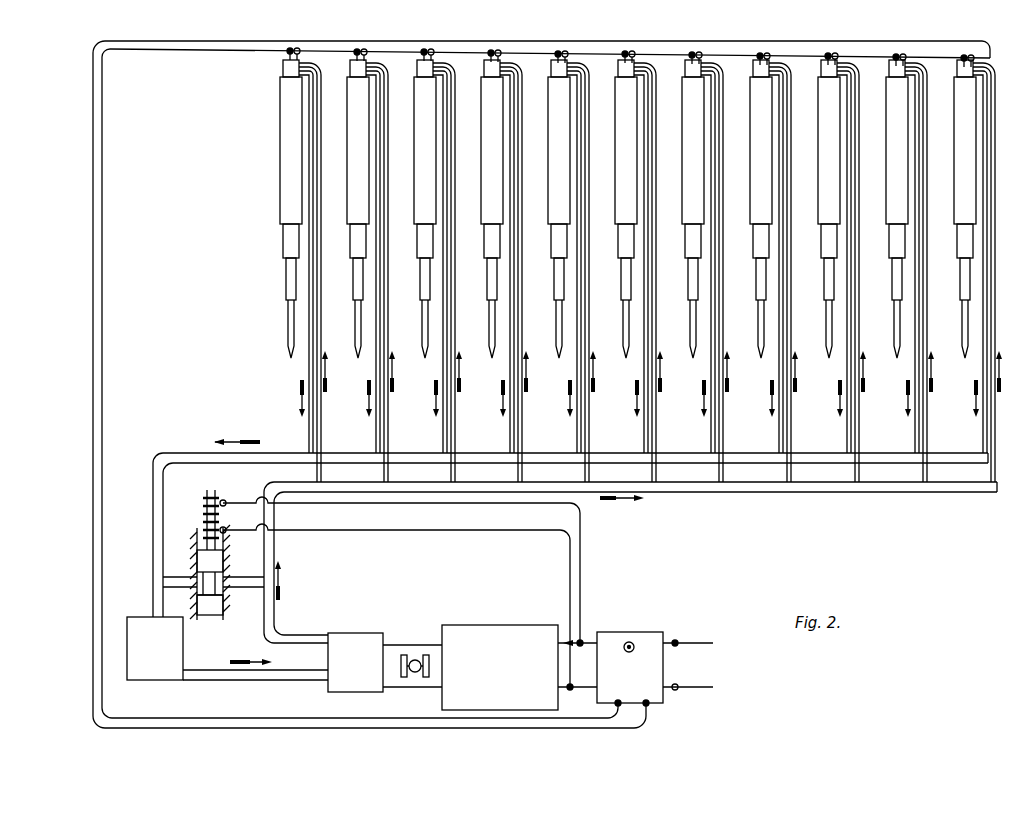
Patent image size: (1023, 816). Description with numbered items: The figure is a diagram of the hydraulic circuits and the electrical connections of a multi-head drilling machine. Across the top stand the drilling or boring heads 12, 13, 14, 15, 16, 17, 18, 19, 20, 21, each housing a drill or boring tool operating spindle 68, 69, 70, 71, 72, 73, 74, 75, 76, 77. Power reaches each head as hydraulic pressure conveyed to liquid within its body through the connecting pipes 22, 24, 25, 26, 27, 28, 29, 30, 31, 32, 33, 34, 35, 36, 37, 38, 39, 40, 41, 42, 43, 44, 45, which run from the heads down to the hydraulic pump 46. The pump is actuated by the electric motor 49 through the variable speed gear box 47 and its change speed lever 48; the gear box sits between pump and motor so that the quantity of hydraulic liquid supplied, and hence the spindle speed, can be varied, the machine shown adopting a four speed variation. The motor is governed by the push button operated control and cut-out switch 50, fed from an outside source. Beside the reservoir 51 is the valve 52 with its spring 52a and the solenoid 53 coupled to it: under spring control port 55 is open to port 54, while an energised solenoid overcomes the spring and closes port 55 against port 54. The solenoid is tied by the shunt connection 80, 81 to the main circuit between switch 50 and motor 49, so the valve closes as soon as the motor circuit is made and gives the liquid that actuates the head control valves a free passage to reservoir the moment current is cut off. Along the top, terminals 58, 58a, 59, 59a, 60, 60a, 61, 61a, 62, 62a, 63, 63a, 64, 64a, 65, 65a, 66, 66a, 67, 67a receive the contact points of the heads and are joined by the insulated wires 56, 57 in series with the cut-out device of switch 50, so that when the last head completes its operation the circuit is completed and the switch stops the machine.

The drilling or boring head 12 is at (291, 180).
The drilling or boring head 13 is at (358, 180).
The drilling or boring head 14 is at (425, 180).
The drilling or boring head 15 is at (492, 180).
The drilling or boring head 16 is at (559, 180).
The drilling or boring head 17 is at (626, 180).
The drilling or boring head 18 is at (693, 180).
The drilling or boring head 19 is at (761, 180).
The drilling or boring head 20 is at (829, 180).
The drilling or boring head 21 is at (897, 180).
The connecting pipe 22 is at (978, 268).
The connecting pipe 24 is at (712, 494).
The connecting pipe 25 is at (669, 457).
The connecting pipe 26 is at (770, 362).
The connecting pipe 27 is at (787, 358).
The connecting pipe 28 is at (702, 362).
The connecting pipe 29 is at (719, 358).
The connecting pipe 30 is at (635, 362).
The connecting pipe 31 is at (652, 358).
The connecting pipe 32 is at (838, 362).
The connecting pipe 33 is at (855, 358).
The connecting pipe 34 is at (568, 362).
The connecting pipe 35 is at (585, 358).
The connecting pipe 36 is at (501, 362).
The connecting pipe 37 is at (518, 358).
The connecting pipe 38 is at (906, 362).
The connecting pipe 39 is at (923, 358).
The connecting pipe 40 is at (300, 362).
The connecting pipe 41 is at (317, 358).
The connecting pipe 42 is at (367, 362).
The connecting pipe 43 is at (384, 358).
The connecting pipe 44 is at (434, 362).
The connecting pipe 45 is at (451, 358).
The hydraulic pump 46 is at (355, 662).
The variable speed gear box 47 is at (398, 644).
The change speed lever 48 is at (421, 660).
The electric motor 49 is at (494, 640).
The control and cut-out switch 50 is at (655, 669).
The reservoir 51 is at (125, 650).
The valve 52 is at (212, 620).
The spring 52a is at (207, 547).
The solenoid 53 is at (206, 530).
The port 54 is at (173, 590).
The port 55 is at (239, 576).
The insulated wire 56 is at (96, 364).
The insulated wire 57 is at (104, 402).
The terminal 58 is at (288, 49).
The terminal 58a is at (298, 48).
The terminal 59 is at (355, 50).
The terminal 59a is at (365, 49).
The terminal 60 is at (422, 50).
The terminal 60a is at (432, 49).
The terminal 61 is at (489, 51).
The terminal 61a is at (499, 50).
The terminal 62 is at (556, 52).
The terminal 62a is at (566, 51).
The terminal 63 is at (623, 52).
The terminal 63a is at (633, 51).
The terminal 64 is at (690, 53).
The terminal 64a is at (700, 52).
The terminal 65 is at (758, 54).
The terminal 65a is at (768, 53).
The terminal 66 is at (826, 54).
The terminal 66a is at (836, 53).
The terminal 67 is at (894, 55).
The terminal 67a is at (904, 54).
The tool operating spindle 68 is at (286, 296).
The tool operating spindle 69 is at (353, 296).
The tool operating spindle 70 is at (420, 296).
The tool operating spindle 71 is at (487, 296).
The tool operating spindle 72 is at (554, 296).
The tool operating spindle 73 is at (621, 296).
The tool operating spindle 74 is at (688, 296).
The tool operating spindle 75 is at (756, 296).
The tool operating spindle 76 is at (824, 296).
The tool operating spindle 77 is at (892, 296).
The shunt connection 80 is at (448, 505).
The shunt connection 81 is at (447, 532).